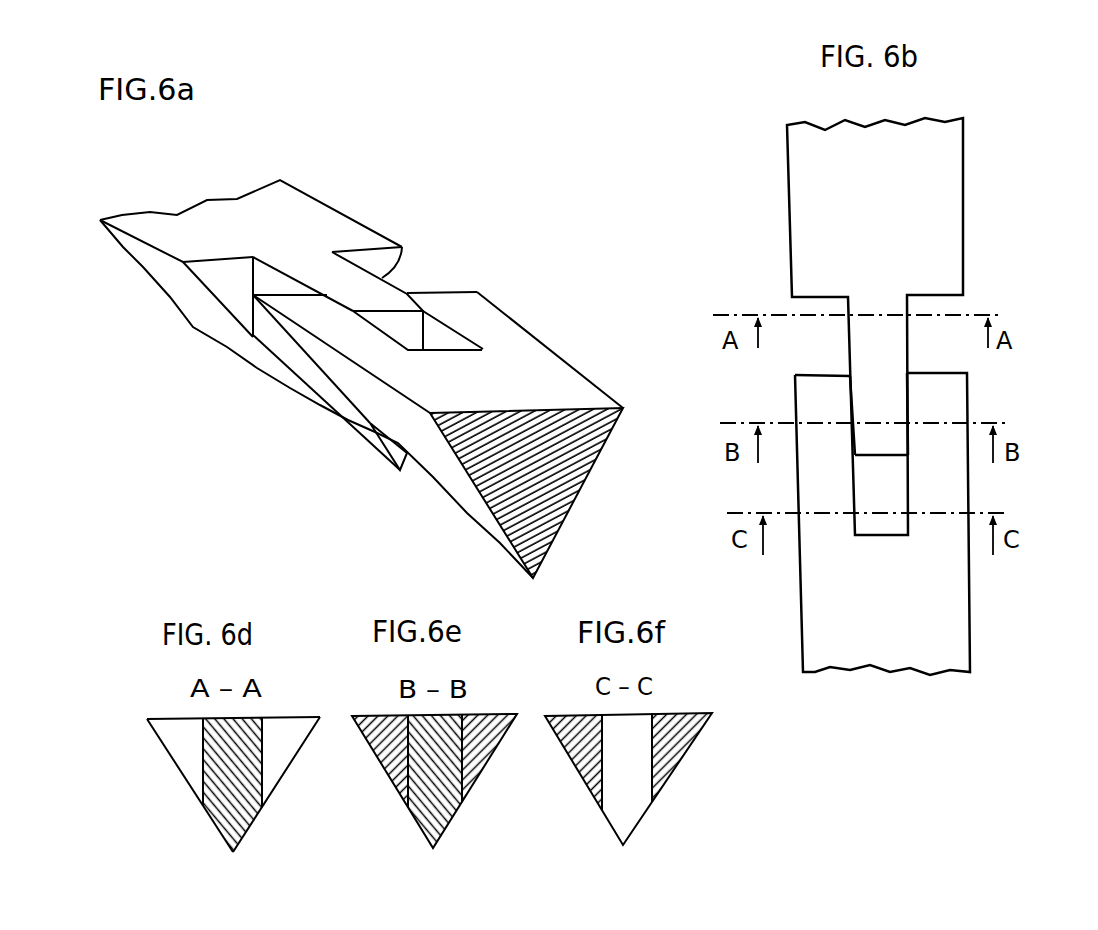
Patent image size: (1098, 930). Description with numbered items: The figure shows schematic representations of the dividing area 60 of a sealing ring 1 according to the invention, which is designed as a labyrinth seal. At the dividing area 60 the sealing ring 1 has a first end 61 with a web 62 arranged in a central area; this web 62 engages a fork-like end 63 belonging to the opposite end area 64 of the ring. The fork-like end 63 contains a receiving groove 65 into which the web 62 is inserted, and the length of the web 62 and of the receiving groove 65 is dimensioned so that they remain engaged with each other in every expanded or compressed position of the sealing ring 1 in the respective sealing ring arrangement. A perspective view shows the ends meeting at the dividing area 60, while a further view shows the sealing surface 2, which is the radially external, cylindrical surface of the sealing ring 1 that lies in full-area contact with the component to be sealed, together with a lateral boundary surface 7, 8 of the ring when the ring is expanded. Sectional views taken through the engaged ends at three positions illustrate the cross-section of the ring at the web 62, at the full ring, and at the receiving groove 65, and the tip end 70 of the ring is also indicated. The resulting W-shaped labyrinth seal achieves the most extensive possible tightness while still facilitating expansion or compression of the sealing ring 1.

In FIG. 6a, the sealing ring 1 is at (365, 192).
In FIG. 6a, the dividing area 60 is at (412, 264).
In FIG. 6a, the first end 61 is at (173, 233).
In FIG. 6a, the web 62 is at (353, 292).
In FIG. 6b, the web 62 is at (895, 383).
In FIG. 6a, the fork-like end 63 is at (353, 337).
In FIG. 6a, the opposite end area 64 is at (445, 377).
In FIG. 6a, the receiving groove 65 is at (440, 338).
In FIG. 6b, the receiving groove 65 is at (894, 483).
In FIG. 6a, the tip end face 70 is at (540, 580).
In FIG. 6d, the sealing surface 2 is at (175, 713).
In FIG. 6d, the lateral boundary surface 7 is at (175, 769).
In FIG. 6d, the lateral boundary surface 8 is at (278, 787).